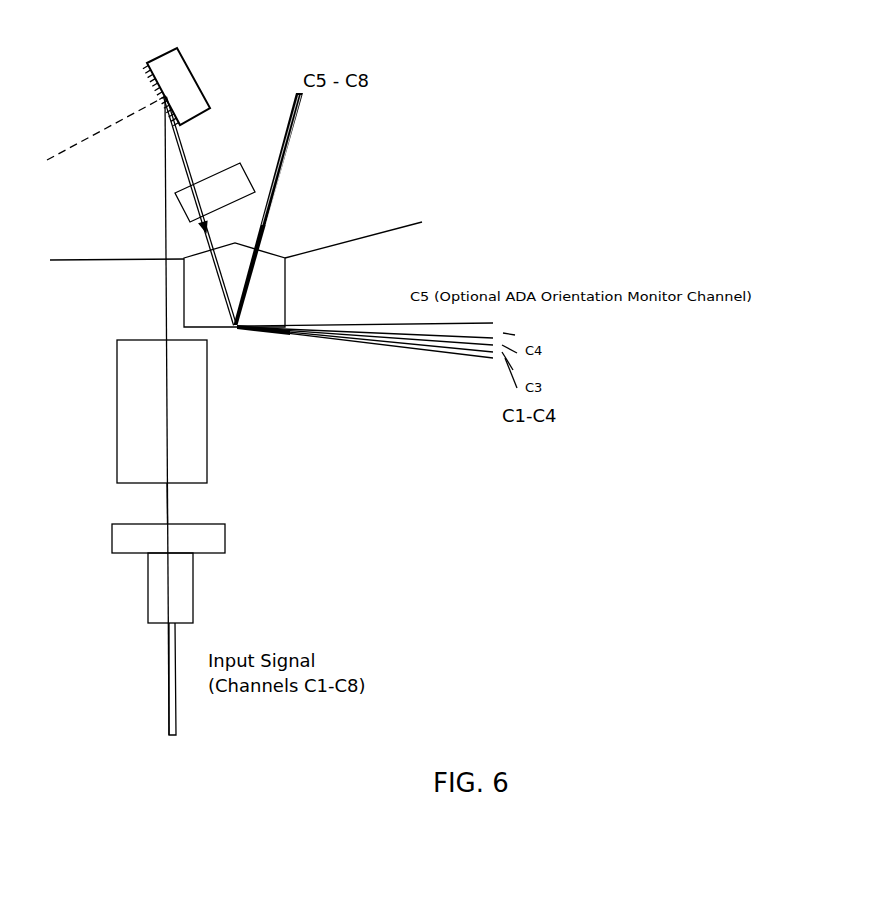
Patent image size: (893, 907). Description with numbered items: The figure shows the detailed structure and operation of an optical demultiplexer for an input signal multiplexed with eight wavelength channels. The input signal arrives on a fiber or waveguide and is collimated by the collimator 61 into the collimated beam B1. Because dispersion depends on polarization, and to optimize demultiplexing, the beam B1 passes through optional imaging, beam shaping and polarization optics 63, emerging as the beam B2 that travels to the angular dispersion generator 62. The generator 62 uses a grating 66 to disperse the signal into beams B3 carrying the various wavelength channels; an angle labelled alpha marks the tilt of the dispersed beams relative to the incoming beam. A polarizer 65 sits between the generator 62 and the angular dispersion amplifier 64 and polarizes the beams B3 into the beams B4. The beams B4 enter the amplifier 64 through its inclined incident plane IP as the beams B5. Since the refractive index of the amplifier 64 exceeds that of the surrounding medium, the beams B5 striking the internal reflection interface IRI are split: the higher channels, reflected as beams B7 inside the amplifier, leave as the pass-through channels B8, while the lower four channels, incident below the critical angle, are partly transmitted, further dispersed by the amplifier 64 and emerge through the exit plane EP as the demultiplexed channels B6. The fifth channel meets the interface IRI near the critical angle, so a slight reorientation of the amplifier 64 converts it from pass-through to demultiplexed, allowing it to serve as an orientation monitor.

The collimator 61 is at (181, 629).
The angular dispersion generator 62 is at (178, 74).
The imaging/beam shaping/polarization optics 63 is at (162, 411).
The angular dispersion amplifier 64 is at (293, 288).
The polarizer 65 is at (215, 192).
The grating 66 is at (150, 74).
The collimated beam B1 is at (165, 501).
The collimated beam B2 is at (162, 290).
The dispersed beams B3 is at (195, 157).
The polarized beams B4 is at (207, 243).
The beams inside the angular dispersion amplifier B5 is at (205, 291).
The demultiplexed channels B6 is at (428, 352).
The beam in prism right B7 is at (269, 291).
The pass-through channels B8 is at (293, 185).
The input plane IP is at (106, 261).
The exit plane EP is at (363, 228).
The internal reflection interface IRI is at (210, 322).